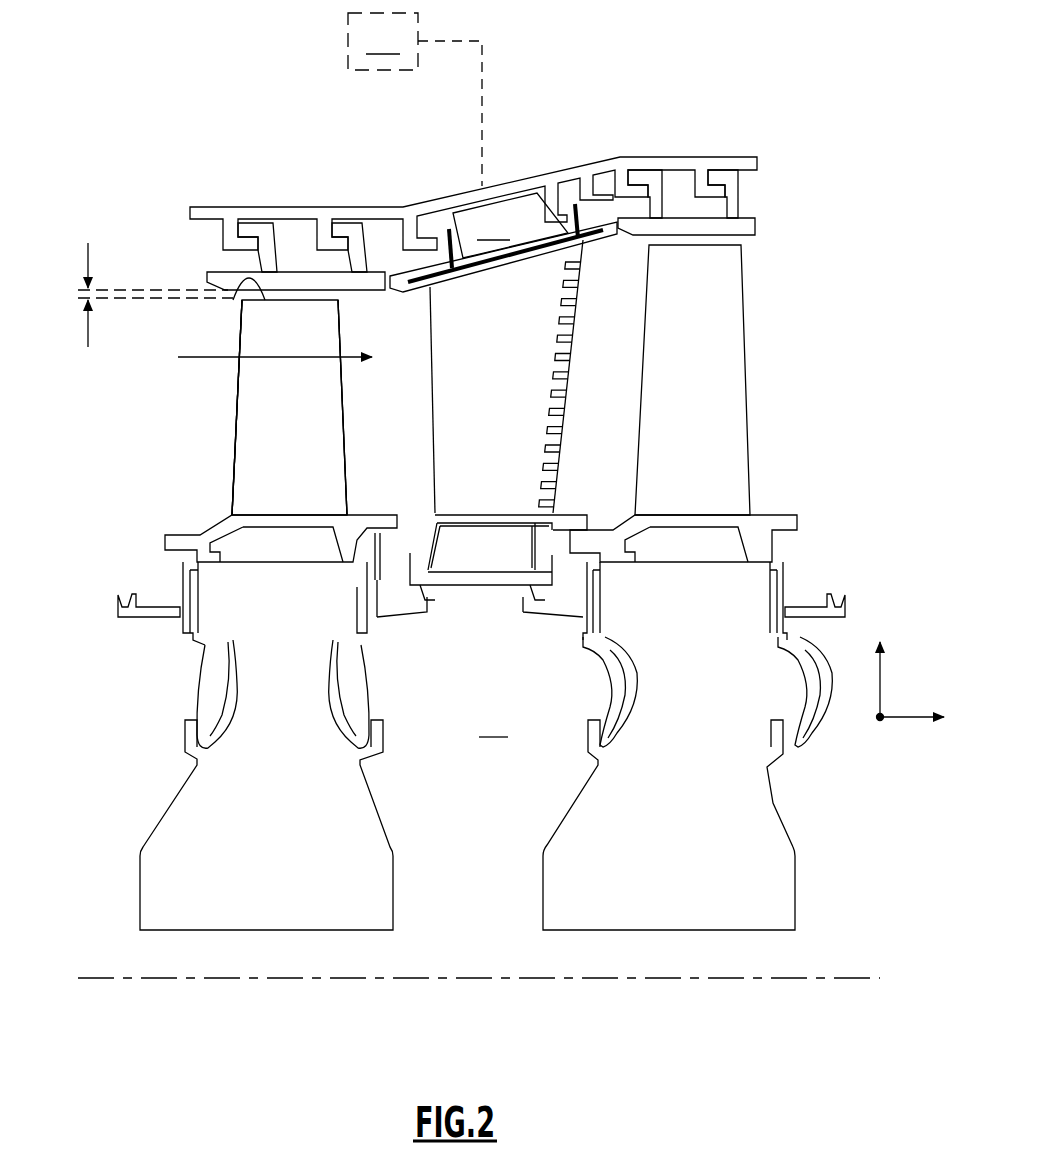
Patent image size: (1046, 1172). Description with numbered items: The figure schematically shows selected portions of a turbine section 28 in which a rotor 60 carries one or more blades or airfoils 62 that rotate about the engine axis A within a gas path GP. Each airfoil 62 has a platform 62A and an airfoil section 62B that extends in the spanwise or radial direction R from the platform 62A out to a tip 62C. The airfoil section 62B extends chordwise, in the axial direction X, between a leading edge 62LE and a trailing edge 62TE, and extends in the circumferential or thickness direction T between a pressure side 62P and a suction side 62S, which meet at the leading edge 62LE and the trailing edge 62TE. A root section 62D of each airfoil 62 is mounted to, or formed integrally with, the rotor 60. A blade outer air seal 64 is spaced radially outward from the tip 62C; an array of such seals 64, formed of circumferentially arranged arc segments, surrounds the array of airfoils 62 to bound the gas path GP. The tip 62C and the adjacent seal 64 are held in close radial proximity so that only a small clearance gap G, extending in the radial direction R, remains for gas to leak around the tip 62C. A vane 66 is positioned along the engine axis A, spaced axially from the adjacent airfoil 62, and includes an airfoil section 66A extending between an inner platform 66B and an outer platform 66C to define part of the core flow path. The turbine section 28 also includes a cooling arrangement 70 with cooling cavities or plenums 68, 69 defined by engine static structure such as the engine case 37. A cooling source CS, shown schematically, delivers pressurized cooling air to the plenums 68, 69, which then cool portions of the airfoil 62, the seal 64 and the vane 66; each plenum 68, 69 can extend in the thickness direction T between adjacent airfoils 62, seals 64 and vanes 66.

The turbine section 28 is at (111, 148).
The engine case 37 is at (249, 206).
The rotor 60 is at (160, 817).
The airfoil 62 is at (470, 496).
The platform 62A is at (200, 533).
The airfoil section 62B is at (265, 412).
The tip 62C is at (233, 301).
The root section 62D is at (218, 609).
The leading edge 62LE is at (232, 453).
The trailing edge 62TE is at (348, 457).
The pressure side 62P is at (255, 490).
The suction side 62S is at (342, 407).
The blade outer air seal 64 is at (205, 278).
The vane 66 is at (512, 428).
The airfoil section 66A is at (520, 460).
The inner platform 66B is at (573, 512).
The outer platform 66C is at (589, 245).
The cooling cavity or plenum 68 is at (284, 244).
The cooling cavity or plenum 69 is at (495, 724).
The cooling arrangement 70 is at (473, 162).
The cooling source CS is at (415, 99).
The clearance gap G is at (87, 252).
The gas path GP is at (190, 357).
The engine axis A is at (835, 978).
The radial direction R is at (892, 673).
The axial direction X is at (921, 719).
The thickness direction T is at (878, 720).